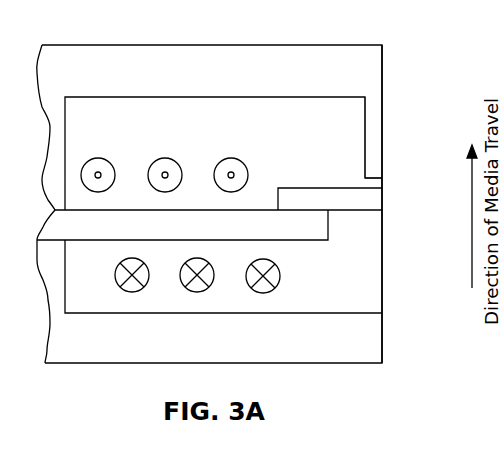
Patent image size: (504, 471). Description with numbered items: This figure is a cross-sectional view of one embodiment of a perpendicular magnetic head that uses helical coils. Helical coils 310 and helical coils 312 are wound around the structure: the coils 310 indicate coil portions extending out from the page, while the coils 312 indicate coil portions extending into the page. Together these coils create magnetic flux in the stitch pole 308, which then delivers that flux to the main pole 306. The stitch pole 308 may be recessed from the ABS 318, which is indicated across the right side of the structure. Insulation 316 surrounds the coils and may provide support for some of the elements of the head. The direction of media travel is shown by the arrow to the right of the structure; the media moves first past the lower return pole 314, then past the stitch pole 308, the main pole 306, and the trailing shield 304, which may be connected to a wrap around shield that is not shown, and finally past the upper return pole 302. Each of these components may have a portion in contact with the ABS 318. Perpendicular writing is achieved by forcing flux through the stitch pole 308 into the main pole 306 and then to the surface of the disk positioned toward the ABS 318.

The upper return pole 302 is at (258, 80).
The trailing shield 304 is at (383, 142).
The main pole 306 is at (383, 193).
The stitch pole 308 is at (239, 236).
The helical coils 310 is at (98, 158).
The helical coils 312 is at (115, 280).
The lower return pole 314 is at (239, 348).
The insulation 316 is at (329, 151).
The ABS 318 is at (390, 64).